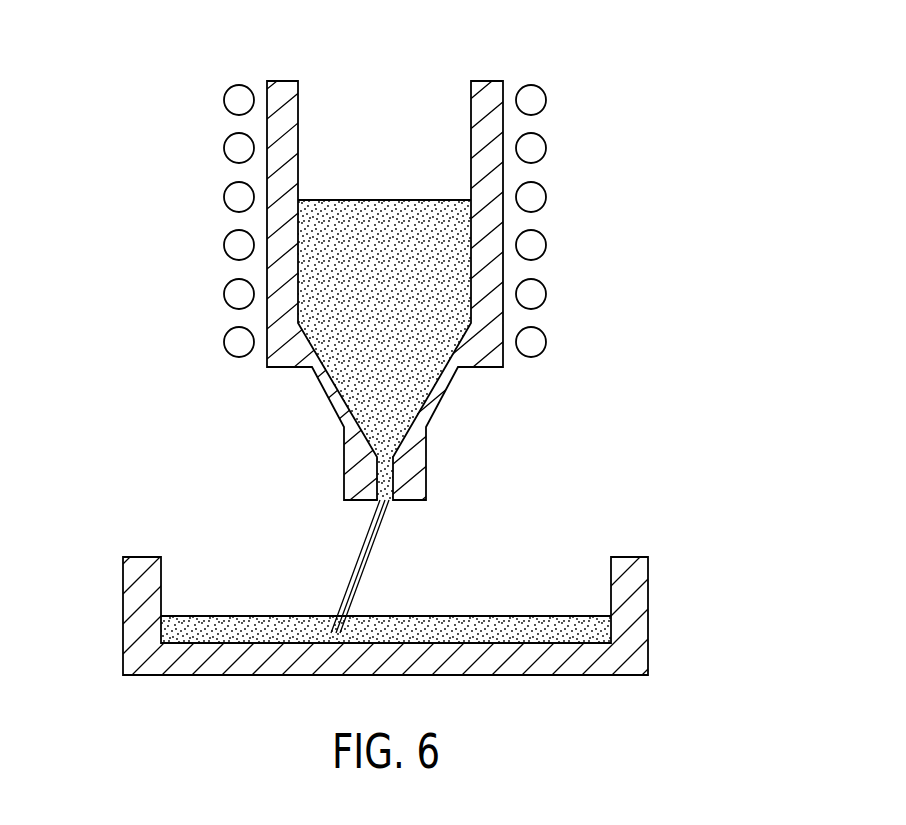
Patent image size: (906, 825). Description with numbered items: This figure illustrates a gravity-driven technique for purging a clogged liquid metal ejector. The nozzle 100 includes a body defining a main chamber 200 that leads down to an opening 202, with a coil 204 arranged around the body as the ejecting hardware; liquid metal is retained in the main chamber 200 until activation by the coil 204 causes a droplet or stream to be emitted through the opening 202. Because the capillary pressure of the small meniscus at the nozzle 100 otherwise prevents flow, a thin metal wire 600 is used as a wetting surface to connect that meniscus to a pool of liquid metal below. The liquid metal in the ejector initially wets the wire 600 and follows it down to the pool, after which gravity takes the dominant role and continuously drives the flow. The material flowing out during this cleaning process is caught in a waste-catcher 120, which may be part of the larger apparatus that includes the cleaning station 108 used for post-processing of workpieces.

The nozzle 100 is at (440, 306).
The main chamber 200 is at (292, 80).
The coil 204 is at (546, 247).
The opening 202 is at (378, 500).
The thin metal wire 600 is at (367, 560).
The cleaning station 108 is at (410, 616).
The waste-catcher 120 is at (130, 620).